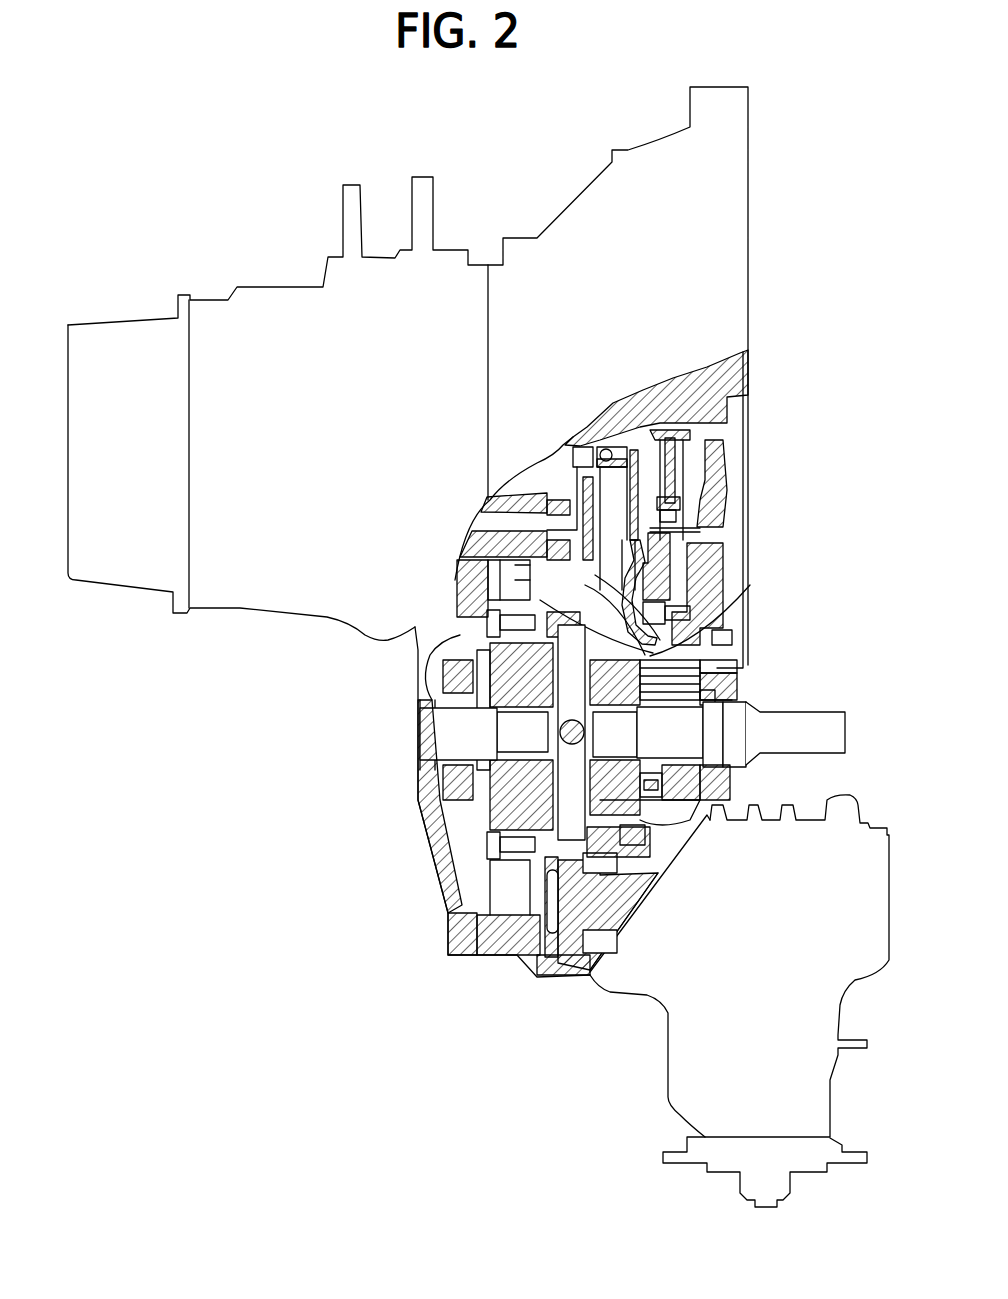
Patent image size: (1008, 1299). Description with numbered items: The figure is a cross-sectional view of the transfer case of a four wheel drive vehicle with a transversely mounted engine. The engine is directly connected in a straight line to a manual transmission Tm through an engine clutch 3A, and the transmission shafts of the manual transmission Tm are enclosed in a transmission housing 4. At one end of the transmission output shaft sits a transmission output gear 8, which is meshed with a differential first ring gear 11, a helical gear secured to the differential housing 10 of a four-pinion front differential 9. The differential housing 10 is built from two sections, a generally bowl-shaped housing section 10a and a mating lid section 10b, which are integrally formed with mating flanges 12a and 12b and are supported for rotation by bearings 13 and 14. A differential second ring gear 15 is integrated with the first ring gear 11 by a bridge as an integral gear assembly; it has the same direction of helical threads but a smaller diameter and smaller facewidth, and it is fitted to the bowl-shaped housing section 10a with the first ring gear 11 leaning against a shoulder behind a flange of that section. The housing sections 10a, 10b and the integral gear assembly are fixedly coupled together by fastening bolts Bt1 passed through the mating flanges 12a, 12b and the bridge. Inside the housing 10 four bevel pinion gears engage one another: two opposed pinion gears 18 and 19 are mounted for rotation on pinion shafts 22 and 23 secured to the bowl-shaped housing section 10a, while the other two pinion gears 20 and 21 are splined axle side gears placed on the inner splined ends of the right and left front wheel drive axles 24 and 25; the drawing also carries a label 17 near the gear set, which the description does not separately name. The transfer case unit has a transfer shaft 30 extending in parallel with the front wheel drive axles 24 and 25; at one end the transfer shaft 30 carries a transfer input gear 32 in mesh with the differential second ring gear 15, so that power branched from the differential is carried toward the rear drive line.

The manual transmission Tm is at (278, 278).
The transmission housing 4 is at (222, 298).
The engine clutch 3A is at (582, 182).
The transmission output gear 8 is at (590, 487).
The front differential 9 is at (678, 620).
The differential first ring gear 11 is at (470, 585).
The fastening bolts Bt1 is at (490, 645).
The differential second ring gear 15 is at (612, 650).
The differential housing 10 is at (347, 690).
The bowl-shaped housing section 10a is at (445, 680).
The lid section 10b is at (445, 720).
The right front wheel drive axle 24 is at (440, 780).
The pinion gear 21 is at (508, 742).
The side gear 17 is at (612, 727).
The pinion shaft 22 is at (700, 660).
The pinion gear 18 is at (715, 680).
The pinion gear 20 is at (725, 700).
The pinion gear 19 is at (700, 765).
The left front wheel drive axle 25 is at (830, 720).
The bearing 13 is at (710, 780).
The pinion shaft 23 is at (650, 825).
The bearing 14 is at (445, 795).
The mating flange 12b is at (490, 850).
The mating flange 12a is at (490, 880).
The transfer shaft 30 is at (628, 915).
The transfer input gear 32 is at (540, 970).